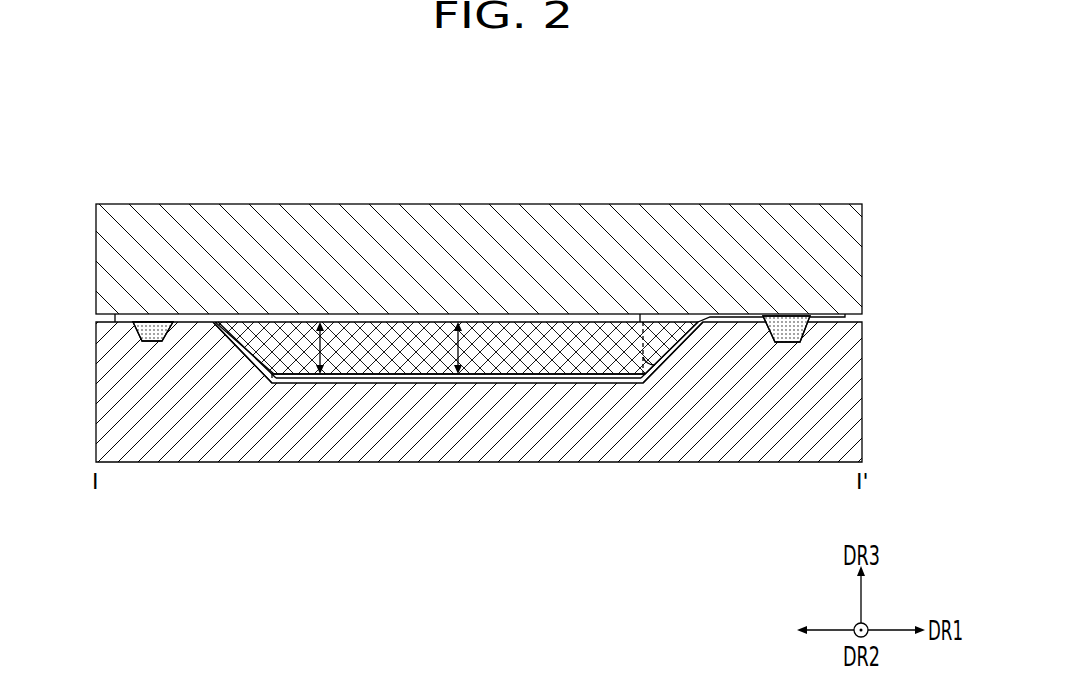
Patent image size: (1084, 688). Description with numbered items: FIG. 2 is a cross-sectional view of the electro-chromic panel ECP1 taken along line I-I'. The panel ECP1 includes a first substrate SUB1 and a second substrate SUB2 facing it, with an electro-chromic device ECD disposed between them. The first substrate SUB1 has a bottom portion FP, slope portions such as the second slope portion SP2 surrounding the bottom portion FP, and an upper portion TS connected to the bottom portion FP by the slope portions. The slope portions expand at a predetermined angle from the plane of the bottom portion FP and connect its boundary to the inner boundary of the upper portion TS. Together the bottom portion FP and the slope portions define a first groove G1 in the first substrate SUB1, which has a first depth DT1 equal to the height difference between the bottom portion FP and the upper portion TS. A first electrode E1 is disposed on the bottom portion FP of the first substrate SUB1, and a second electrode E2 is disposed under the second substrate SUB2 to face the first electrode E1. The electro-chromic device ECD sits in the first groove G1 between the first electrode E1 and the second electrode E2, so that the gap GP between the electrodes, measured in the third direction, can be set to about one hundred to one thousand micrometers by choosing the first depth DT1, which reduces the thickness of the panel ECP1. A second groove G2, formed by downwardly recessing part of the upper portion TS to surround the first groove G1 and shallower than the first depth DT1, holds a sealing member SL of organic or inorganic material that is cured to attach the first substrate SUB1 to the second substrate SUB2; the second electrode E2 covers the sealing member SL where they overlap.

The electro-chromic panel ECP1 is at (752, 157).
The first substrate SUB1 is at (843, 392).
The second substrate SUB2 is at (843, 257).
The sealing member SL is at (145, 330).
The first electrode E1 is at (507, 378).
The second electrode E2 is at (507, 316).
The electro-chromic device ECD is at (420, 358).
The first groove G1 is at (591, 350).
The second groove G2 is at (776, 342).
The bottom portion FP is at (590, 383).
The upper portion TS is at (730, 324).
The second slope portion SP2 is at (244, 356).
The first depth DT1 is at (338, 348).
The gap GP is at (472, 348).